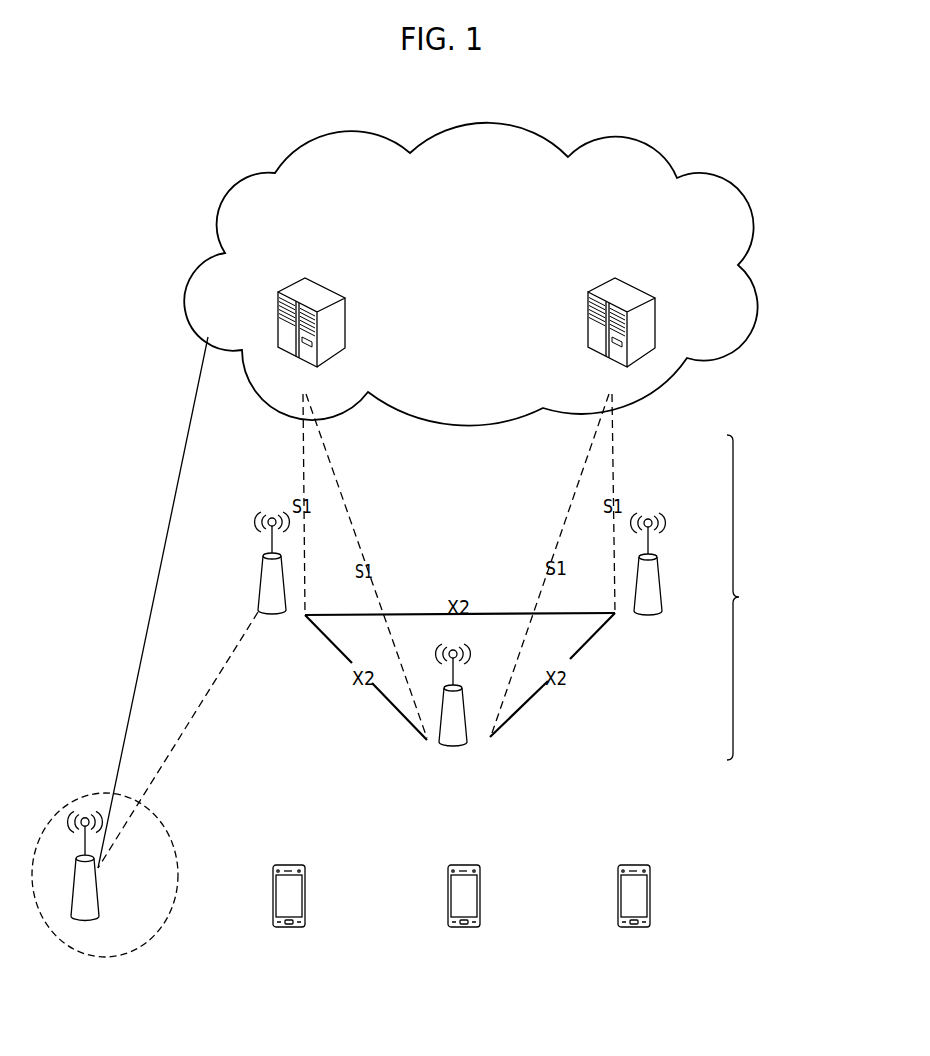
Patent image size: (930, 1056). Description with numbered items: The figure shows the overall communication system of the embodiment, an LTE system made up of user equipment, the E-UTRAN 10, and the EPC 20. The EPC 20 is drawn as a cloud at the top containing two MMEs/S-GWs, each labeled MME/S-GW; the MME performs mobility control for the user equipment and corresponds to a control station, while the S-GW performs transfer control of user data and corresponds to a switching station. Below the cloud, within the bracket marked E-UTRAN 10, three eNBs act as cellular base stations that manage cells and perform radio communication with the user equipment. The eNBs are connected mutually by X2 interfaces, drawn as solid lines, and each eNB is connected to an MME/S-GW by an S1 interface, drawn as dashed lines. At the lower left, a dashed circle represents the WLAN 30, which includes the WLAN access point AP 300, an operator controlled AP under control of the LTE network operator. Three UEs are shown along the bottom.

The EPC 20 is at (660, 148).
The E-UTRAN 10 is at (778, 597).
The WLAN 30 is at (148, 943).
The AP 300 is at (99, 892).